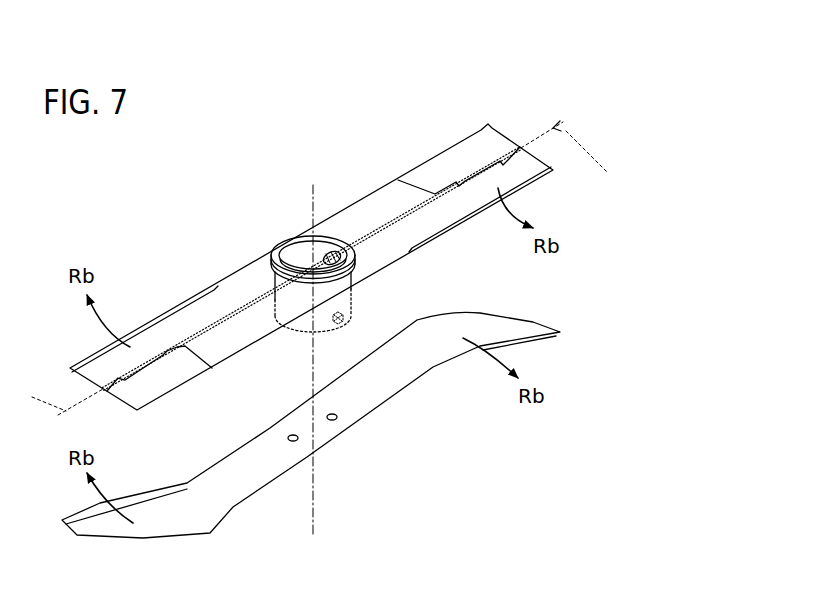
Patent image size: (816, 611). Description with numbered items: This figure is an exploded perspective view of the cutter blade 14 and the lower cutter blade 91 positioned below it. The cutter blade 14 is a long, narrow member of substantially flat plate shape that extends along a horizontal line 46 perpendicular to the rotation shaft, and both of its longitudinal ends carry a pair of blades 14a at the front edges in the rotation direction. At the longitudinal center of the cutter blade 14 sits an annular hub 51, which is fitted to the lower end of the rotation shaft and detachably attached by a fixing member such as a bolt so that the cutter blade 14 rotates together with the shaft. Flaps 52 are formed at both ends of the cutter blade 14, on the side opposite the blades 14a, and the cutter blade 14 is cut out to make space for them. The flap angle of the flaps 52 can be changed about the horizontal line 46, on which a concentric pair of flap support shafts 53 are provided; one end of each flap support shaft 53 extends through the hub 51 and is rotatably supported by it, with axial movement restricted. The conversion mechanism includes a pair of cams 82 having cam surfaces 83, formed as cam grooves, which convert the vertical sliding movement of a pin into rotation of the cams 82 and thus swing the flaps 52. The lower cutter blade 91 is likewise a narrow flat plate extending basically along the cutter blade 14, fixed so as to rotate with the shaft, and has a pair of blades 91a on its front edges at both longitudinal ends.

The cutter blade 14 is at (245, 283).
The blades 14a is at (73, 361).
The horizontal line 46 is at (345, 268).
The hub 51 is at (299, 334).
The flaps 52 is at (452, 155).
The flap support shafts 53 is at (397, 208).
The cams 82 is at (331, 251).
The cam surfaces 83 is at (308, 255).
The lower cutter blade 91 is at (373, 403).
The blades 91a is at (528, 341).